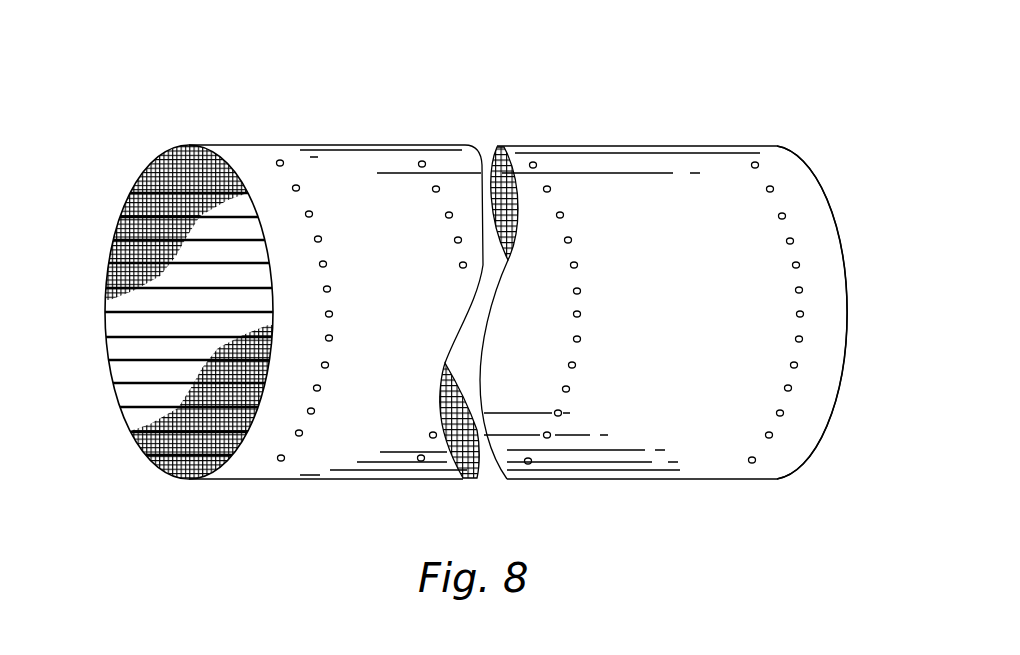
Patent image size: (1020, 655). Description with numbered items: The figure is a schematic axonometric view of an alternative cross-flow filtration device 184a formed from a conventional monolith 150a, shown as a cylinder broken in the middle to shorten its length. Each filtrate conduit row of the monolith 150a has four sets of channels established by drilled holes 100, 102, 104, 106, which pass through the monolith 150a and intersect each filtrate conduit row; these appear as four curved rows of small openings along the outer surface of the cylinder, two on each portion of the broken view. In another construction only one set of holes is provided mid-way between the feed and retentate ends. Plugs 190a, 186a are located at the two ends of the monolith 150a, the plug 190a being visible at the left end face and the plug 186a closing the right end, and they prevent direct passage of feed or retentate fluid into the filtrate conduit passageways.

The alternative cross-flow filtration device 184a is at (602, 33).
The monolith 150a is at (297, 140).
The plug 186a is at (840, 194).
The plug 190a is at (113, 316).
The drilled holes 100 is at (333, 380).
The drilled holes 102 is at (438, 222).
The drilled holes 104 is at (588, 263).
The drilled holes 106 is at (772, 361).